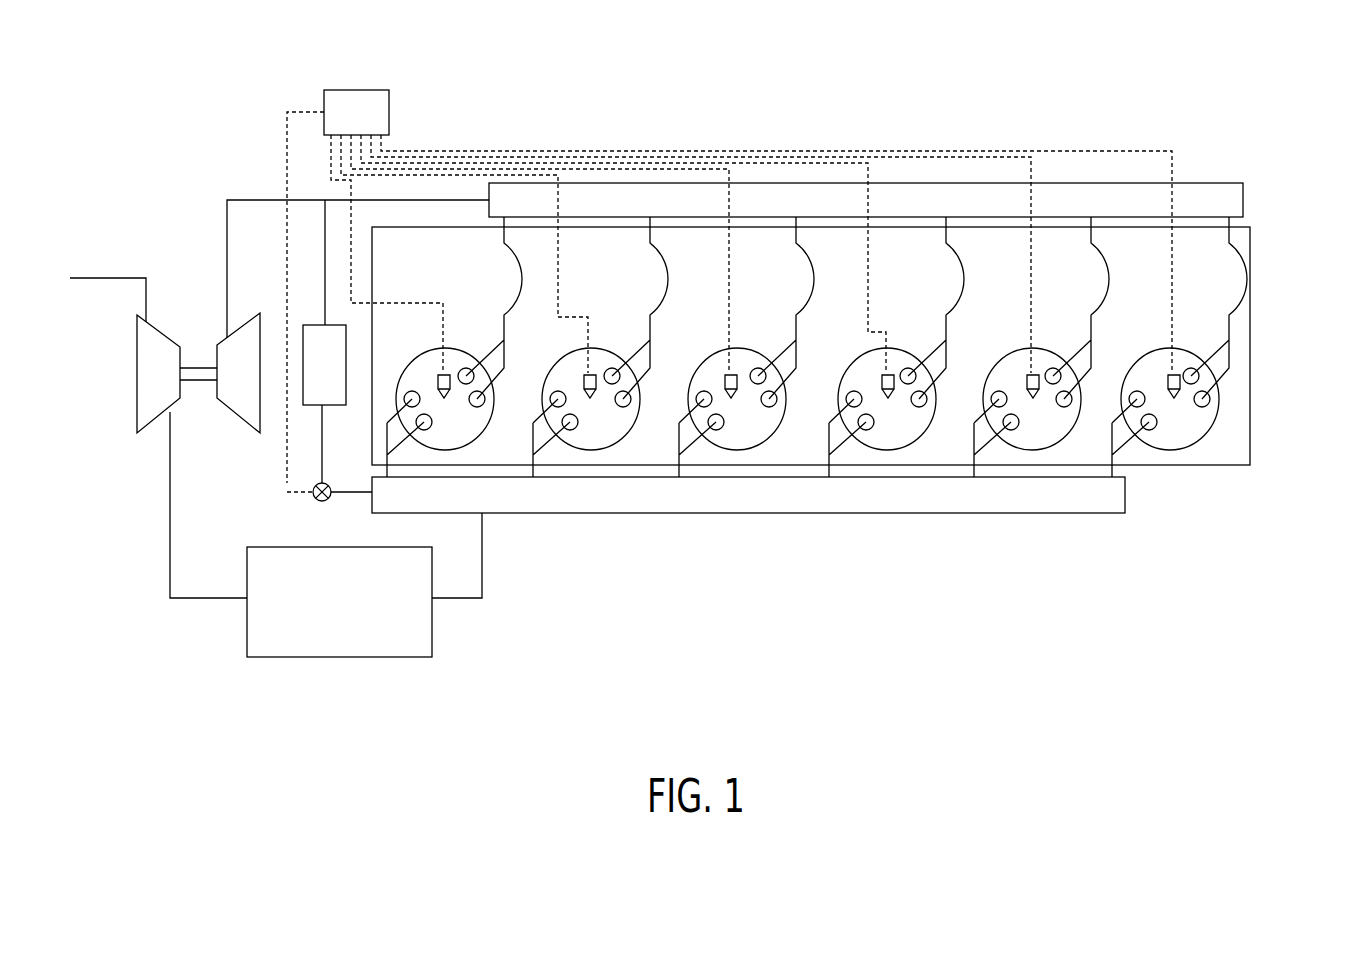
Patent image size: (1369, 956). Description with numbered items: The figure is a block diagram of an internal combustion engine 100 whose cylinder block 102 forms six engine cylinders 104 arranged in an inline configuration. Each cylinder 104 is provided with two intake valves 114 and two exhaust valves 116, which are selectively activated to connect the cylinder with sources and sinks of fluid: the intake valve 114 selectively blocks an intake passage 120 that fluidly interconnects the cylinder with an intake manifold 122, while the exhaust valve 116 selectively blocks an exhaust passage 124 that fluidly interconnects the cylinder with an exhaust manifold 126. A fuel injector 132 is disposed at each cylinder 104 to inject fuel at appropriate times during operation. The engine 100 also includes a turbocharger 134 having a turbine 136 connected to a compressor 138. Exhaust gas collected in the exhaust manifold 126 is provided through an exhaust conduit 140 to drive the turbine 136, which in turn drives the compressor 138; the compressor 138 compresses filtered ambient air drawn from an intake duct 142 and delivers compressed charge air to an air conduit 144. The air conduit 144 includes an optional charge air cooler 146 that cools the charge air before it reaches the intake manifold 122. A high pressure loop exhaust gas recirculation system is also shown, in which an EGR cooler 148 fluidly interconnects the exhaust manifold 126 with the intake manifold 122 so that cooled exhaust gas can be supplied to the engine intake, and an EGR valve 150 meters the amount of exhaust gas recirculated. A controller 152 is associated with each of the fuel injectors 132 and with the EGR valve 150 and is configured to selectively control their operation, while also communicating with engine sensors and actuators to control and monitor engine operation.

The internal combustion engine 100 is at (1262, 155).
The cylinder block 102 is at (1233, 443).
The engine cylinder 104 is at (1188, 447).
The intake valve 114 is at (1148, 426).
The exhaust valve 116 is at (1205, 396).
The intake passage 120 is at (1008, 425).
The intake manifold 122 is at (1067, 498).
The exhaust passage 124 is at (1097, 245).
The exhaust manifold 126 is at (1002, 200).
The fuel injector 132 is at (447, 372).
The turbocharger 134 is at (170, 195).
The turbine 136 is at (260, 432).
The compressor 138 is at (137, 400).
The exhaust conduit 140 is at (255, 198).
The intake duct 142 is at (103, 277).
The air conduit 144 is at (170, 572).
The charge air cooler 146 is at (247, 643).
The EGR cooler 148 is at (302, 352).
The EGR valve 150 is at (313, 503).
The controller 152 is at (389, 107).